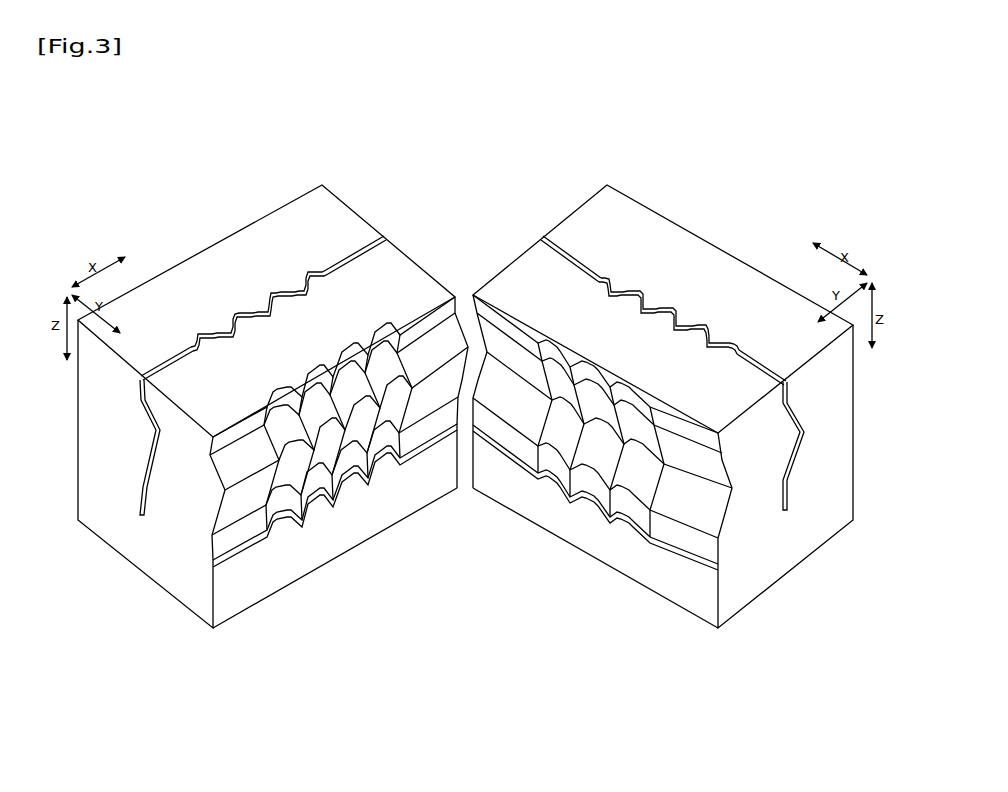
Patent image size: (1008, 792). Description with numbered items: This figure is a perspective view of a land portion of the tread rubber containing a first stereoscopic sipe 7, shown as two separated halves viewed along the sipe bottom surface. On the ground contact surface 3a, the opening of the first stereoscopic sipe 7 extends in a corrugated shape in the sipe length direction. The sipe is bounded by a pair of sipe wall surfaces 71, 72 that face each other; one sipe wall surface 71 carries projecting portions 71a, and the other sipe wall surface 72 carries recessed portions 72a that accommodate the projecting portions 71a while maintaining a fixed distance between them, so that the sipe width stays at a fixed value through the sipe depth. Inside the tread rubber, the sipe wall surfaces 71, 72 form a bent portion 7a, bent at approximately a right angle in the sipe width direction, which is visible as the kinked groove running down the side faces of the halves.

The ground contact surface 3a is at (320, 218).
The first stereoscopic sipe 7 is at (260, 302).
The bent portion 7a is at (163, 445).
The sipe wall surface 71 is at (239, 537).
The projecting portions 71a is at (419, 350).
The sipe wall surface 72 is at (693, 535).
The recessed portions 72a is at (510, 401).